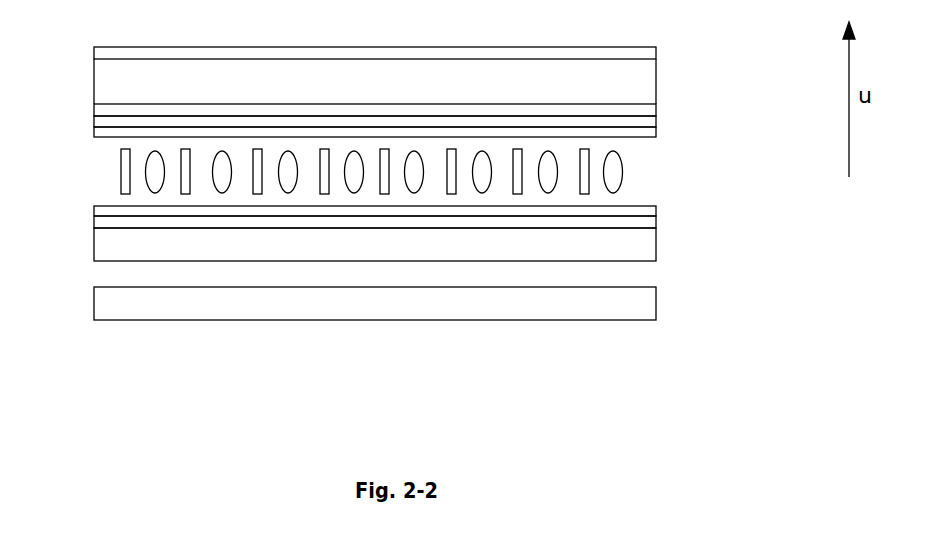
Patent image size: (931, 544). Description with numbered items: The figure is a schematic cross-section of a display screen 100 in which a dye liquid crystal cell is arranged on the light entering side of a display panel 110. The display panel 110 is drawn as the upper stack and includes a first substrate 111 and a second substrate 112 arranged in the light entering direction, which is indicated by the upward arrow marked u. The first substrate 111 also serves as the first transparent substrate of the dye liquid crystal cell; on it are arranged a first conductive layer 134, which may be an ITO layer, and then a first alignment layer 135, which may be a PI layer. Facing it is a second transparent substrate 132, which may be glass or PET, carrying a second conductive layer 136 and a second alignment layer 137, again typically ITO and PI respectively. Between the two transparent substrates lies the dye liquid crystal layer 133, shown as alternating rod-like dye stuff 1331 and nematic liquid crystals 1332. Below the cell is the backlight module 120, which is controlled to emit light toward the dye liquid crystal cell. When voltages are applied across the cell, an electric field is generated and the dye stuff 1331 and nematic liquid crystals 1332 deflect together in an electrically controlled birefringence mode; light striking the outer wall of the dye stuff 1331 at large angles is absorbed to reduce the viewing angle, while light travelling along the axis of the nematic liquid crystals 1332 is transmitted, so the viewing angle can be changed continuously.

The display screen 100 is at (137, 20).
The display panel 110 is at (94, 48).
The second substrate 112 is at (673, 51).
The first substrate 111 is at (673, 108).
The first conductive layer 134 is at (673, 122).
The first alignment layer 135 is at (673, 143).
The dye liquid crystal layer 133 is at (457, 293).
The dye stuff 1331 is at (593, 213).
The nematic liquid crystals 1332 is at (556, 214).
The second alignment layer 137 is at (673, 205).
The second conductive layer 136 is at (673, 222).
The second transparent substrate 132 is at (673, 248).
The backlight module 120 is at (673, 307).